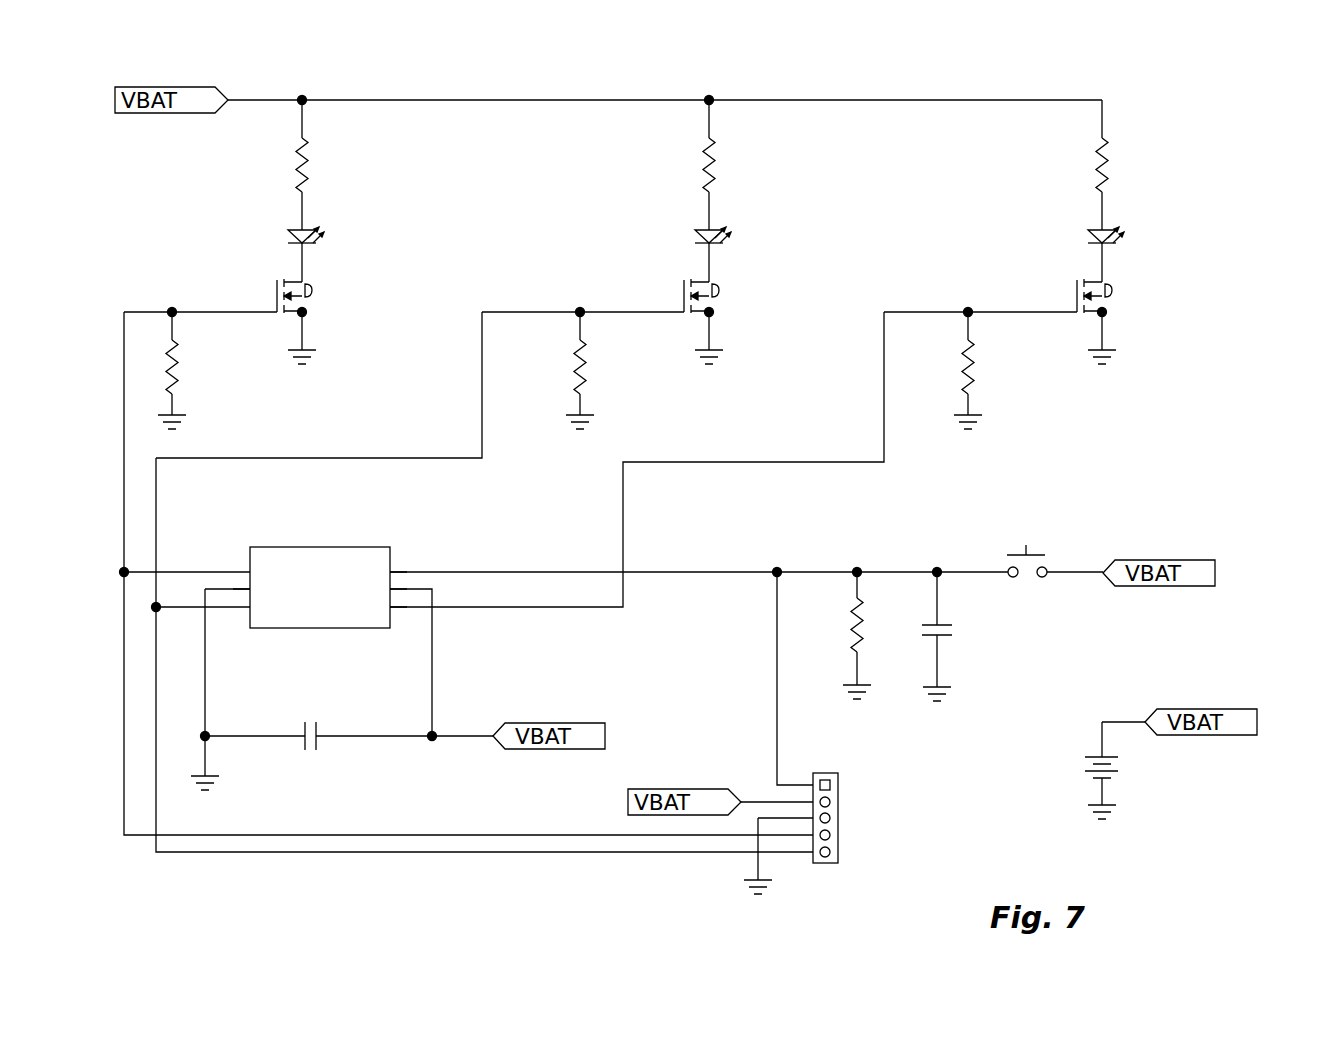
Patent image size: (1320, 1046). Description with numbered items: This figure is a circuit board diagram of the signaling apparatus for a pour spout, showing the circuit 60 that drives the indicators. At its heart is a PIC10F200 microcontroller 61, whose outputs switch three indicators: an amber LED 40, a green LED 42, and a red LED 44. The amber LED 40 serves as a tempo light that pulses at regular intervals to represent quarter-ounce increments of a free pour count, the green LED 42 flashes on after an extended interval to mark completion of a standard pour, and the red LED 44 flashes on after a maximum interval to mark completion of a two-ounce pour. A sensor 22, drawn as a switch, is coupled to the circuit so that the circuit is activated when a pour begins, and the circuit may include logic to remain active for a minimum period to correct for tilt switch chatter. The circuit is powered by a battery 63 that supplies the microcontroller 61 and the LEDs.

The circuit 60 is at (1224, 864).
The red LED 44 is at (289, 217).
The yellow LED 40 is at (697, 217).
The green LED 42 is at (1087, 217).
The microcontroller 61 is at (375, 547).
The switch 22 is at (1025, 588).
The battery 63 is at (1150, 761).